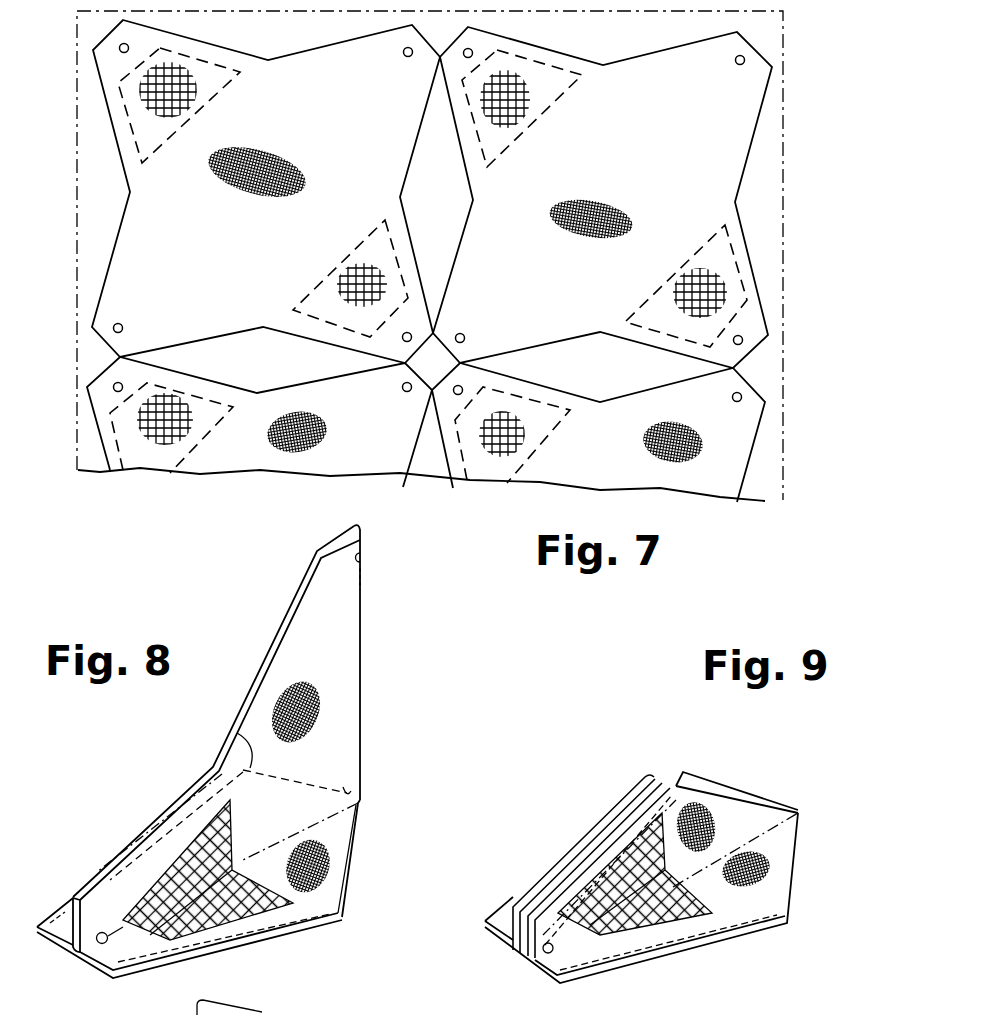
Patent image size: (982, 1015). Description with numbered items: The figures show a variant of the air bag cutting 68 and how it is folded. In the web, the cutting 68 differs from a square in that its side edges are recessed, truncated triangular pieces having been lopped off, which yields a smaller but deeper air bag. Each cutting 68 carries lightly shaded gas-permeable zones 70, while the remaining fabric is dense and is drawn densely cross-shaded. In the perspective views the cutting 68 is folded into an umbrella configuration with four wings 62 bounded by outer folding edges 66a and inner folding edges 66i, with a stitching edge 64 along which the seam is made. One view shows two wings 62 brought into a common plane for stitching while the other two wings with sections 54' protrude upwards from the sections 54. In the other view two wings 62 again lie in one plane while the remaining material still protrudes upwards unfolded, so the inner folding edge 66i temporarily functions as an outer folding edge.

In FIG. 8, the section 54 is at (212, 910).
In FIG. 9, the section 54 is at (682, 898).
In FIG. 8, the section 54' is at (216, 715).
In FIG. 9, the section 54' is at (761, 808).
In FIG. 8, the wing 62 is at (347, 898).
In FIG. 9, the wing 62 is at (698, 770).
In FIG. 9, the stitching edge 64 is at (627, 792).
In FIG. 8, the outer folding edge 66a is at (243, 733).
In FIG. 9, the outer folding edge 66a is at (712, 787).
In FIG. 8, the inner folding edge 66i is at (360, 656).
In FIG. 9, the inner folding edge 66i is at (703, 865).
In FIG. 7, the cutting 68 is at (757, 163).
In FIG. 7, the gas-permeable zone 70 is at (728, 262).
In FIG. 8, the gas-permeable zone 70 is at (247, 903).